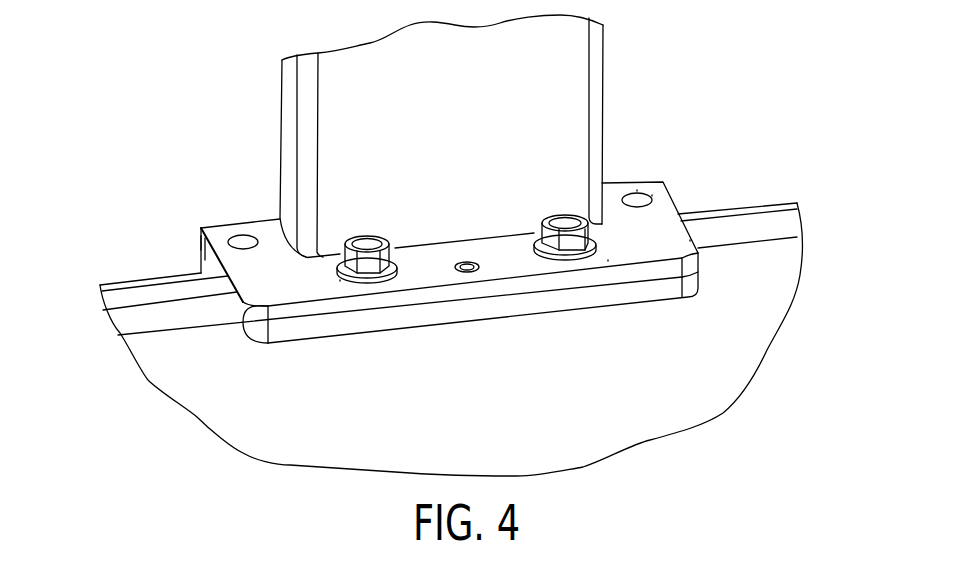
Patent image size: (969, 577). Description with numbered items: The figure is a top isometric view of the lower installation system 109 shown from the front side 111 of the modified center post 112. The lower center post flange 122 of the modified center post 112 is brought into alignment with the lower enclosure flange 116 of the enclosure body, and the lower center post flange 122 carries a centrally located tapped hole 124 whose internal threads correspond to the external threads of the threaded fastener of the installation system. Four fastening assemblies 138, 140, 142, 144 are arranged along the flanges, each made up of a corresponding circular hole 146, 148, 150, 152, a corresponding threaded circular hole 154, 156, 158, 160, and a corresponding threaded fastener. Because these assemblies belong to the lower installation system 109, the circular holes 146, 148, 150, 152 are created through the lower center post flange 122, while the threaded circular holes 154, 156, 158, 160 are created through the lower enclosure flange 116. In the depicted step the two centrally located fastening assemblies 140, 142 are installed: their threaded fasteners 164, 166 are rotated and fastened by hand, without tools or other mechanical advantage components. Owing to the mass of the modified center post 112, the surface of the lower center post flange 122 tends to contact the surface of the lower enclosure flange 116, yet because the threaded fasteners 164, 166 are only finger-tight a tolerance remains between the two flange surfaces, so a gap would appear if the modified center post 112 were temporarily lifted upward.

The lower installation system 109 is at (165, 47).
The front side 111 is at (333, 155).
The modified center post 112 is at (578, 46).
The lower enclosure flange 116 is at (257, 340).
The lower center post flange 122 is at (255, 288).
The tapped hole 124 is at (490, 272).
The fastening assembly 138 is at (221, 250).
The fastening assembly 140 is at (394, 292).
The fastening assembly 142 is at (598, 267).
The fastening assembly 144 is at (640, 177).
The circular hole 146 is at (232, 232).
The circular hole 148 is at (373, 293).
The circular hole 150 is at (622, 242).
The circular hole 152 is at (652, 197).
The threaded circular hole 154 is at (199, 243).
The threaded circular hole 156 is at (336, 281).
The threaded circular hole 158 is at (615, 260).
The threaded circular hole 160 is at (669, 190).
The threaded fastener 164 is at (383, 252).
The threaded fastener 166 is at (570, 229).